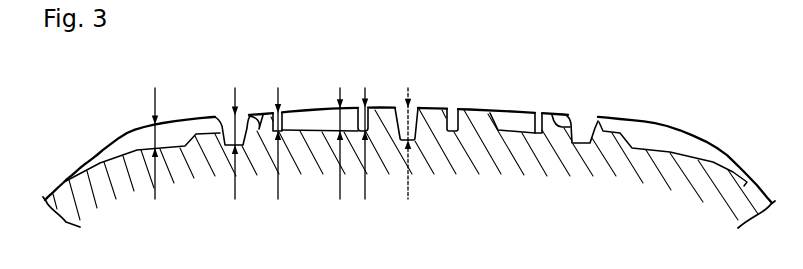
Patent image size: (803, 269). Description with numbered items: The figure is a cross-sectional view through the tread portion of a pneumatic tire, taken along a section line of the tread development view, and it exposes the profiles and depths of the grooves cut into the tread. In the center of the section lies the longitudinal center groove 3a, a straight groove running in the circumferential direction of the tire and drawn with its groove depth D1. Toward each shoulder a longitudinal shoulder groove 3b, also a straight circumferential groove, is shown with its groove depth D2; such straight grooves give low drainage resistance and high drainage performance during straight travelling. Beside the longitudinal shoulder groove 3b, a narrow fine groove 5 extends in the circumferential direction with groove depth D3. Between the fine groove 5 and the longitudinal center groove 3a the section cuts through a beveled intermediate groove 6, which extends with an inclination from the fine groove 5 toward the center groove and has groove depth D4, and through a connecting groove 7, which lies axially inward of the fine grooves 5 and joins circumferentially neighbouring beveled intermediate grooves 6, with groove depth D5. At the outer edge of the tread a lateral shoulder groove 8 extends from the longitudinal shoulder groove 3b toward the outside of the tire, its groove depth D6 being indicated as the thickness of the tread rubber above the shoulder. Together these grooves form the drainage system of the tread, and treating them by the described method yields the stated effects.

The lateral shoulder groove 8 is at (124, 131).
The longitudinal shoulder groove 3b is at (220, 115).
The longitudinal center groove 3a is at (420, 106).
The fine groove 5 is at (272, 114).
The beveled intermediate groove 6 is at (315, 108).
The connecting groove 7 is at (370, 116).
The groove depth of the longitudinal center groove D1 is at (415, 157).
The groove depth of the longitudinal shoulder groove D2 is at (235, 157).
The groove depth of the fine groove D3 is at (280, 157).
The groove depth of the beveled intermediate groove D4 is at (330, 157).
The groove depth of the connecting groove D5 is at (375, 157).
The groove depth of the lateral shoulder groove D6 is at (153, 159).